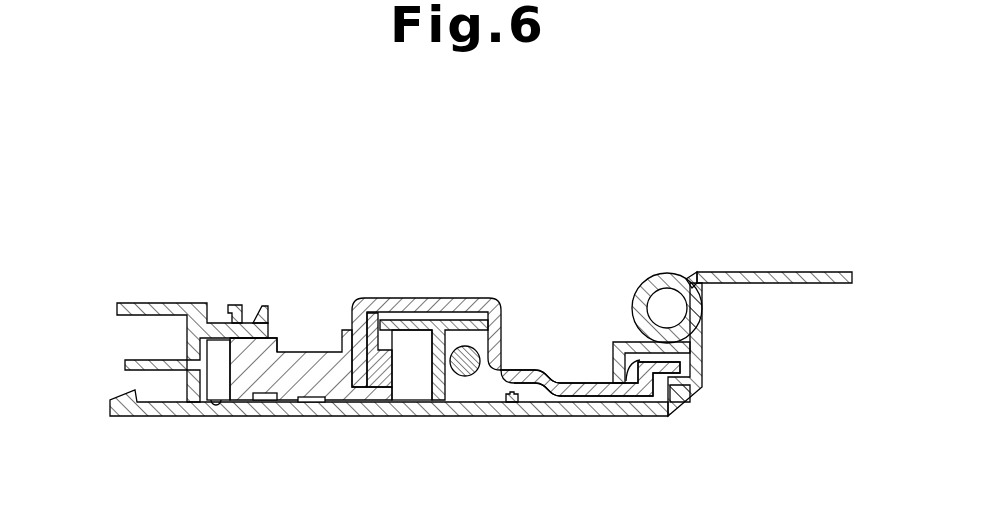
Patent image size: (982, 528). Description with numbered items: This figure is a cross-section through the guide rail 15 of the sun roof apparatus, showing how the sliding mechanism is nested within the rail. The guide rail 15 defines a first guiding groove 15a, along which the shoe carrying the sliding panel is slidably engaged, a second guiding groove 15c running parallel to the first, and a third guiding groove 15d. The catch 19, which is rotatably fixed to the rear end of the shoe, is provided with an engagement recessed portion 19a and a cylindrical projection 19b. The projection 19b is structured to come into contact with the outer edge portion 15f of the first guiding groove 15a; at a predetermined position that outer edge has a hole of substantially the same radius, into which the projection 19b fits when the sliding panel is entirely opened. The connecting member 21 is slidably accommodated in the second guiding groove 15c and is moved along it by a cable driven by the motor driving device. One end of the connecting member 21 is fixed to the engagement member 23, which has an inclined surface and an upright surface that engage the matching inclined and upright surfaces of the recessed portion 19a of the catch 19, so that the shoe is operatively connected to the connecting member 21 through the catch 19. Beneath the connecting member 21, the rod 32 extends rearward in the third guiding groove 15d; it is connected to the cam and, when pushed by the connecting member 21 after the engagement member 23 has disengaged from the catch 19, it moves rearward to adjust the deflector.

The guide rail 15 is at (481, 362).
The first guiding groove 15a is at (216, 403).
The second guiding groove 15c is at (690, 356).
The third guiding groove 15d is at (472, 398).
The outer edge portion 15f is at (257, 316).
The catch 19 is at (324, 373).
The engagement recessed portion 19a is at (381, 382).
The cylindrical projection 19b is at (272, 337).
The connecting member 21 is at (568, 383).
The engagement member 23 is at (383, 355).
The rod 32 is at (458, 349).